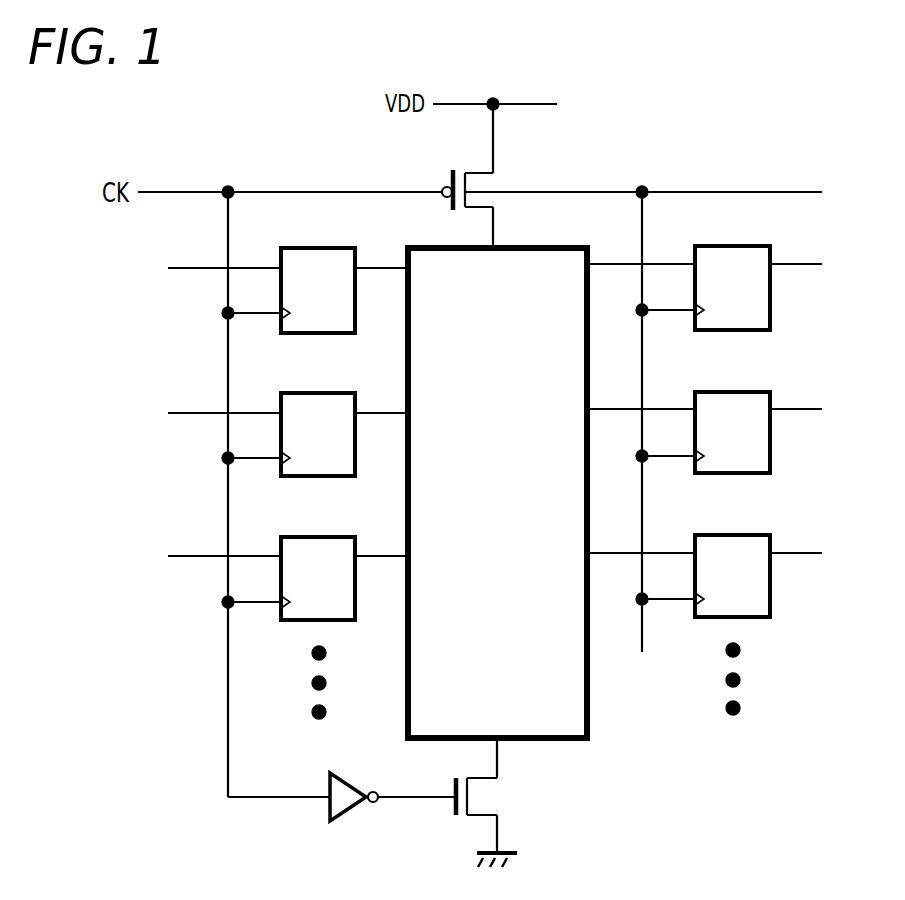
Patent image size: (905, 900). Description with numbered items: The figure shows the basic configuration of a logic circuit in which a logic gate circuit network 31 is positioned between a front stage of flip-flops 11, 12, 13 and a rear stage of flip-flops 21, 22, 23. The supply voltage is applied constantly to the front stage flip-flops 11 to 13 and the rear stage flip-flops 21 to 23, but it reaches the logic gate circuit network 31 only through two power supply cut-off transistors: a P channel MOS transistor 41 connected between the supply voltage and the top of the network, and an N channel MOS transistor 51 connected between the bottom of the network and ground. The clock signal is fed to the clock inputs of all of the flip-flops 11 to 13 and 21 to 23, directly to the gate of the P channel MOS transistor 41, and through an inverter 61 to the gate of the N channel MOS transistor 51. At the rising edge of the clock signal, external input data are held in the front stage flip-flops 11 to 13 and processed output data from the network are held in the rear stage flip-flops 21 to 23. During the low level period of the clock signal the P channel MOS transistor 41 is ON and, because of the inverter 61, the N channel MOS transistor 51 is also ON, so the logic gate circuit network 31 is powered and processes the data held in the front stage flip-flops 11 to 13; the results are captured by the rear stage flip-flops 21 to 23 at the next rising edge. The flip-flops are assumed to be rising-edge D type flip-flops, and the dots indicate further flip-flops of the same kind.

The front stage flip-flop 11 is at (298, 248).
The front stage flip-flop 12 is at (298, 393).
The front stage flip-flop 13 is at (298, 537).
The rear stage flip-flop 21 is at (712, 246).
The rear stage flip-flop 22 is at (712, 392).
The rear stage flip-flop 23 is at (712, 535).
The logic gate circuit network 31 is at (525, 740).
The P channel MOS transistor 41 is at (447, 172).
The N channel MOS transistor 51 is at (478, 816).
The inverter 61 is at (343, 821).